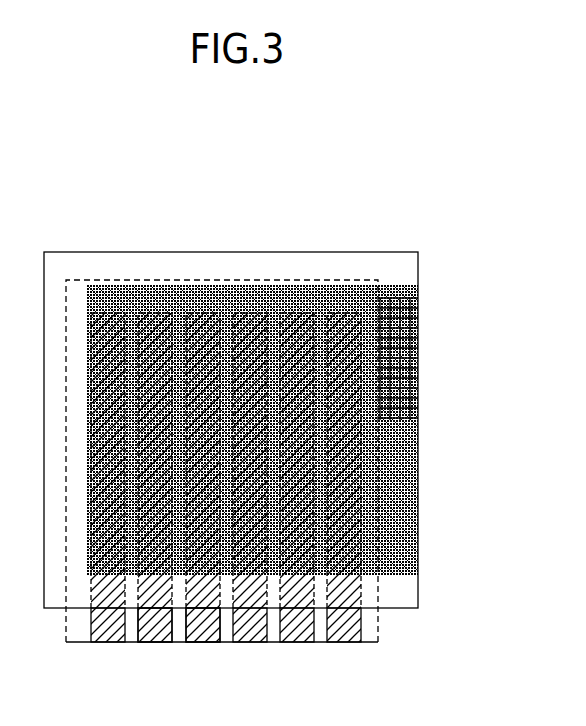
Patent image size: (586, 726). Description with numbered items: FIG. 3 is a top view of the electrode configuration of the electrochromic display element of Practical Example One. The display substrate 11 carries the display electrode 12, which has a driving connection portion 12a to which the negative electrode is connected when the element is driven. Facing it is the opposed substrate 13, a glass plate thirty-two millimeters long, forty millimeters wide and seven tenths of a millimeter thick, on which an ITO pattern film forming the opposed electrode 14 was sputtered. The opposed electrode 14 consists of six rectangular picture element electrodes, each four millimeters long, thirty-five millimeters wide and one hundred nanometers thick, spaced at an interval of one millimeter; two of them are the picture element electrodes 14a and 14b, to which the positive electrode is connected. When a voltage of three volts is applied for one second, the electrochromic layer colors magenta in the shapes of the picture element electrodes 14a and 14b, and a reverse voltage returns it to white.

The display substrate 11 is at (405, 268).
The display electrode 12 is at (400, 466).
The driving connection portion 12a is at (400, 355).
The opposed substrate 13 is at (368, 623).
The opposed electrode 14 is at (108, 313).
The picture element electrode 14a is at (158, 632).
The picture element electrode 14b is at (205, 632).